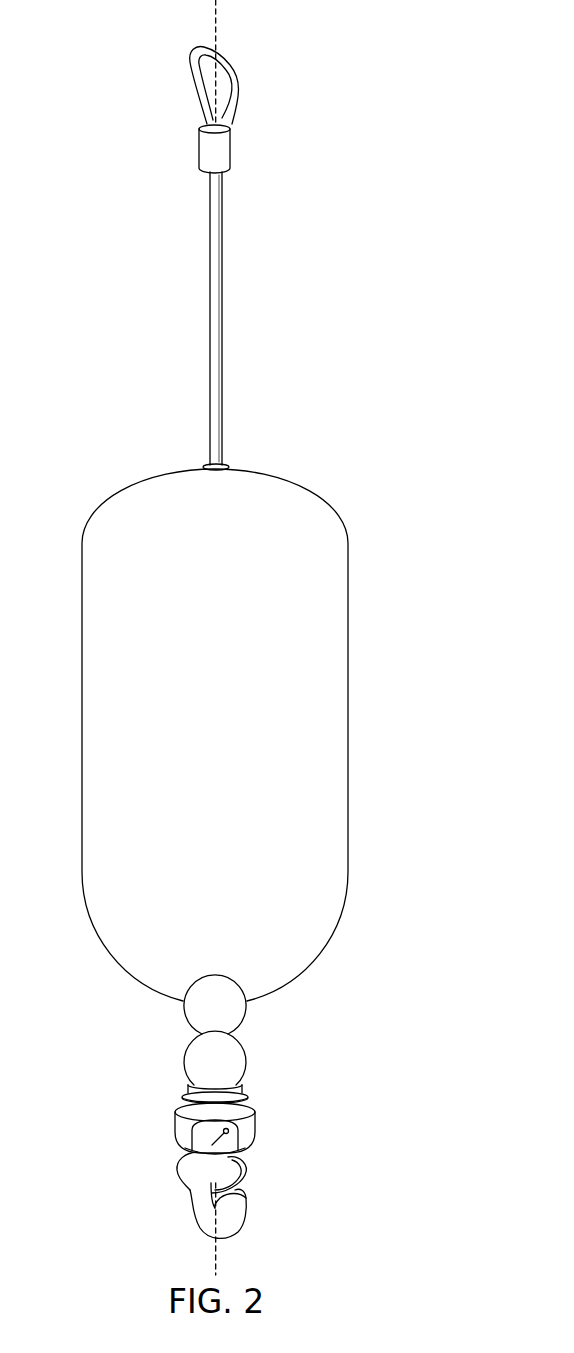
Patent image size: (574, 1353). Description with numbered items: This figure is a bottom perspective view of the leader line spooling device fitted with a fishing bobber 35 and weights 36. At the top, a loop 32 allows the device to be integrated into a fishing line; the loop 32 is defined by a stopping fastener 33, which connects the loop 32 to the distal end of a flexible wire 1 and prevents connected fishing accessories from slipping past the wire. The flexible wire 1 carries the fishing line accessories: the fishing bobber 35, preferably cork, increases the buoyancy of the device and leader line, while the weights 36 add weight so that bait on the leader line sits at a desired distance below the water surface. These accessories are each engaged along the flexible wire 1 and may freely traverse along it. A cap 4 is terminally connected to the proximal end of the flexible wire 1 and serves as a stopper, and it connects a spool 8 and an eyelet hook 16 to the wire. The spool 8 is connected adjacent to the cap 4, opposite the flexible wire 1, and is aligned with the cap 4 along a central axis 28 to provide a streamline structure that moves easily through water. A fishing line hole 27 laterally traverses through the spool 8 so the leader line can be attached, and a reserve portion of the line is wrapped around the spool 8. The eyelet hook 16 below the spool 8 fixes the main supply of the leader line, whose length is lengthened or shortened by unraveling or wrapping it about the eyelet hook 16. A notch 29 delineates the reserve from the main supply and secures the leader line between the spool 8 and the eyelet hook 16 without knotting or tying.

The flexible wire 1 is at (212, 315).
The cap 4 is at (193, 1096).
The spool 8 is at (237, 1143).
The eyelet hook 16 is at (201, 1224).
The fishing line hole 27 is at (190, 1151).
The central axis 28 is at (218, 7).
The notch 29 is at (253, 1163).
The loop 32 is at (198, 85).
The stopping fastener 33 is at (230, 147).
The fishing bobber 35 is at (342, 718).
The weight 36 is at (245, 1014).